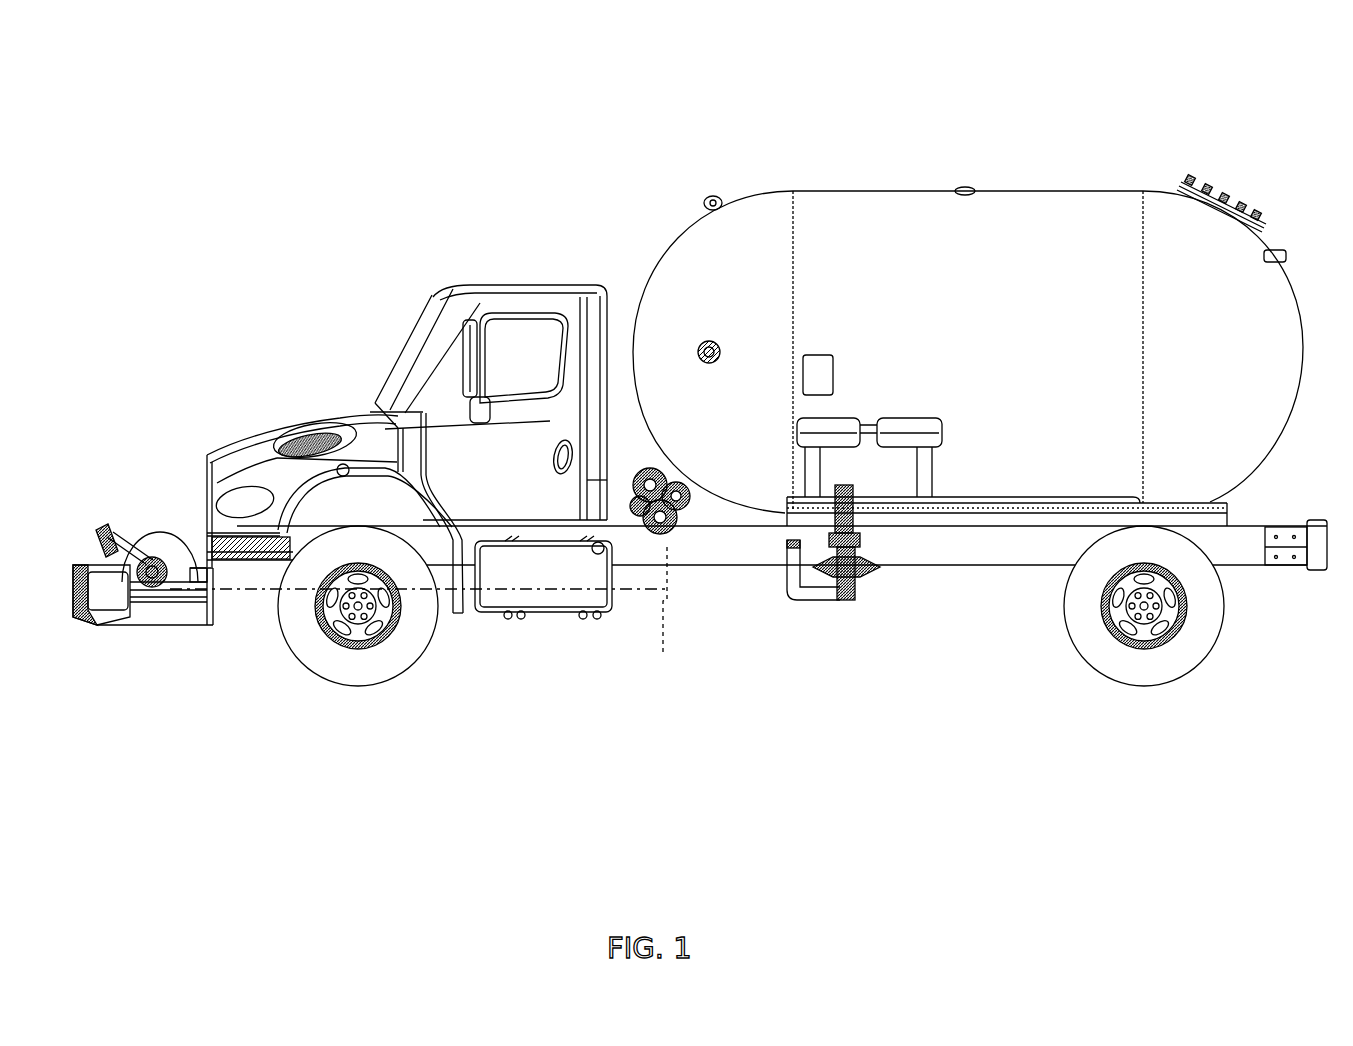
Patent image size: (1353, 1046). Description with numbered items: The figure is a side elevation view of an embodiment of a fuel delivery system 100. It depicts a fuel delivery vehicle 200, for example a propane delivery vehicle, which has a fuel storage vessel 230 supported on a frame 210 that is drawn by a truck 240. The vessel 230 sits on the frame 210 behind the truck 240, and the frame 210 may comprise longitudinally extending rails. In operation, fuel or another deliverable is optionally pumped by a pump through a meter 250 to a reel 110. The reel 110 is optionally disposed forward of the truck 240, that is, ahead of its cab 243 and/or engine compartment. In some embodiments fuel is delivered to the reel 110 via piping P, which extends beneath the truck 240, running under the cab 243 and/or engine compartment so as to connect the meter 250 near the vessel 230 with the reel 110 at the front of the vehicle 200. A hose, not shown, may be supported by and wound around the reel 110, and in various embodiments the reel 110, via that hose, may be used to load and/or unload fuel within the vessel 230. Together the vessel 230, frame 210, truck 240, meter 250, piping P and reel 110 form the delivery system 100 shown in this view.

The fuel delivery system 100 is at (57, 492).
The reel 110 is at (162, 528).
The fuel delivery vehicle 200 is at (1292, 174).
The frame 210 is at (942, 566).
The fuel storage vessel 230 is at (847, 190).
The truck 240 is at (472, 282).
The cab 243 is at (397, 352).
The meter 250 is at (690, 514).
The piping P is at (671, 612).